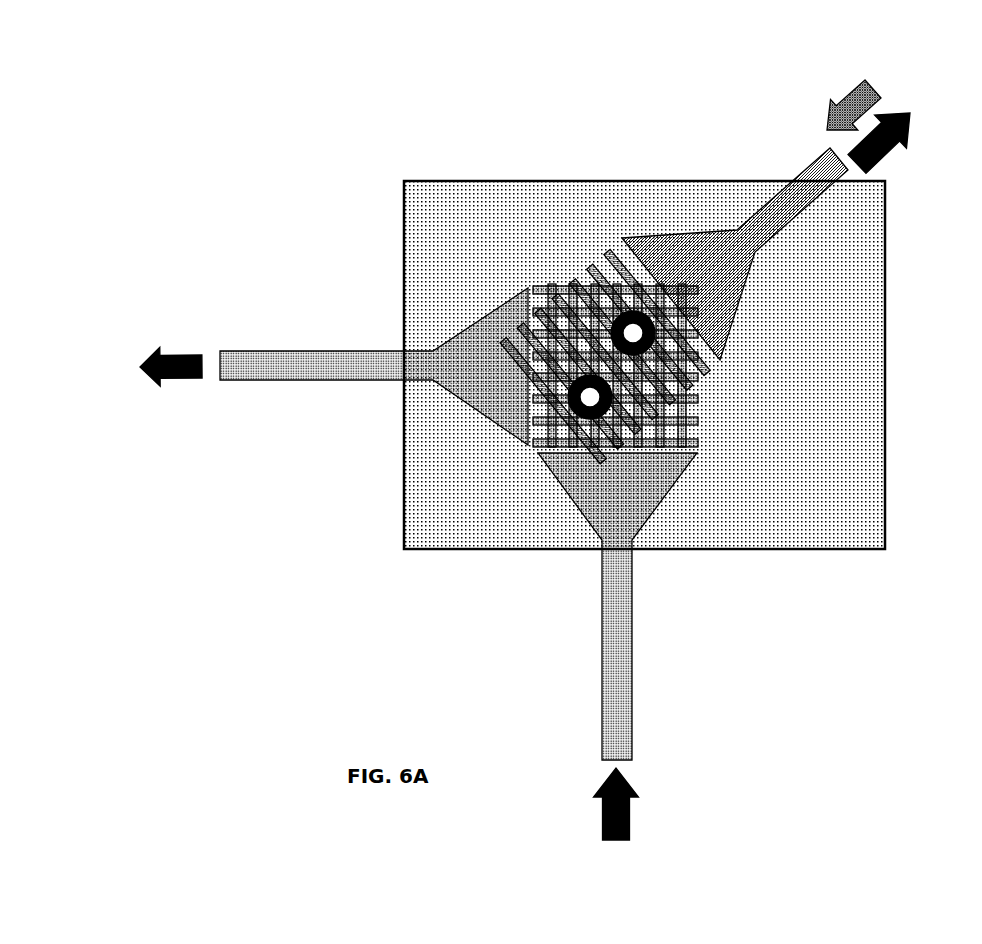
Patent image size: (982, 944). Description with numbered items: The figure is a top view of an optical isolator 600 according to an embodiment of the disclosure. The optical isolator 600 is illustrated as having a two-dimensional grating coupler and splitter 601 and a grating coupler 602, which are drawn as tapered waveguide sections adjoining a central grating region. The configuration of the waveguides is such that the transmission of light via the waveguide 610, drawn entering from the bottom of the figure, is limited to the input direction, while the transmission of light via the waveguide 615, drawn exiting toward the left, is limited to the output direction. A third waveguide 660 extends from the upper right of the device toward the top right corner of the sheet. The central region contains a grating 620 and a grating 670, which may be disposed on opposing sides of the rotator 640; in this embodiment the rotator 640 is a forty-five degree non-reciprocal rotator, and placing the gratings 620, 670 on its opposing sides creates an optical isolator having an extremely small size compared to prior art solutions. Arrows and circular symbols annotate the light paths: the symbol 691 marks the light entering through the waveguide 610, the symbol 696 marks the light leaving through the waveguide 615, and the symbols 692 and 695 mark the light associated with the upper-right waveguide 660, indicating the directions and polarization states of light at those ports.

The optical isolator 600 is at (94, 308).
The 2D grating coupler and splitter 601 is at (552, 488).
The grating coupler 602 is at (622, 238).
The waveguide 610 is at (623, 712).
The waveguide 615 is at (258, 350).
The grating 620 is at (683, 313).
The rotator 640 is at (708, 541).
The third waveguide 660 is at (768, 183).
The grating 670 is at (680, 383).
The input light direction 691 is at (632, 833).
The output light polarization 692 is at (877, 170).
The light polarization 695 is at (850, 93).
The output light polarization 696 is at (162, 385).